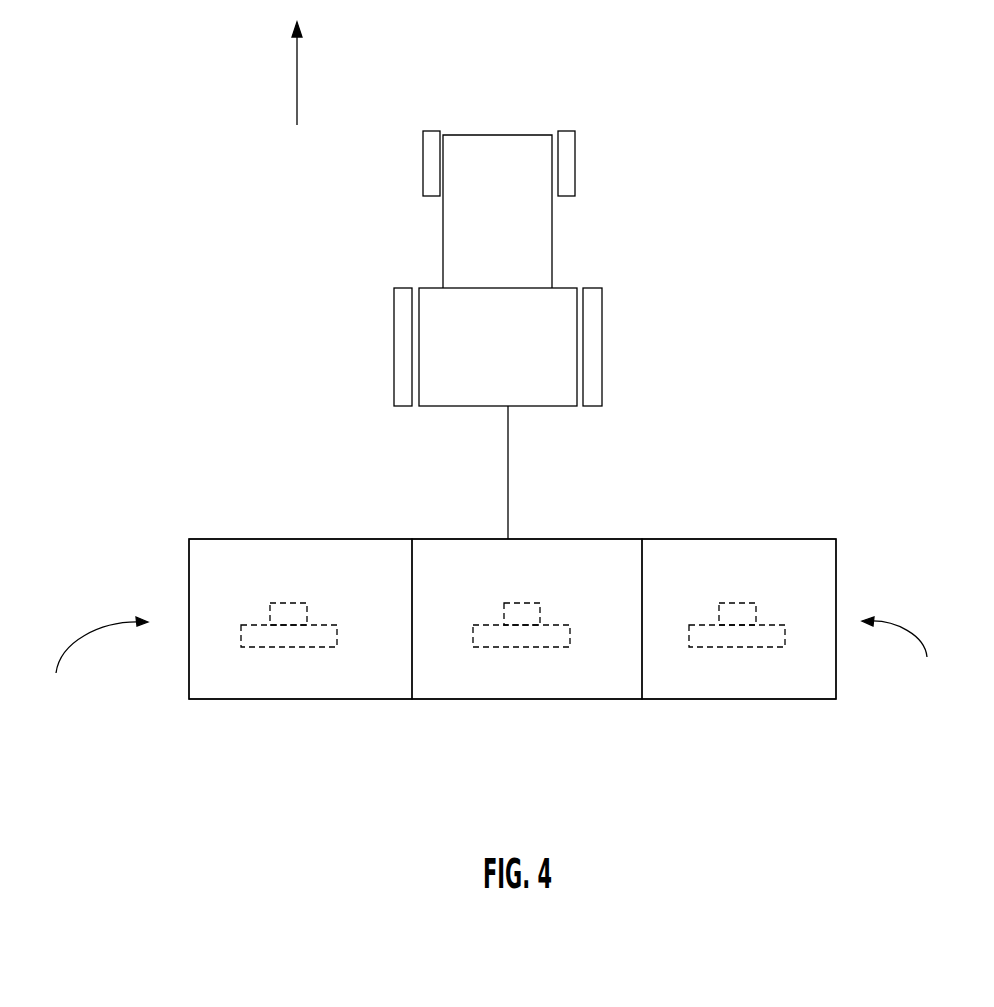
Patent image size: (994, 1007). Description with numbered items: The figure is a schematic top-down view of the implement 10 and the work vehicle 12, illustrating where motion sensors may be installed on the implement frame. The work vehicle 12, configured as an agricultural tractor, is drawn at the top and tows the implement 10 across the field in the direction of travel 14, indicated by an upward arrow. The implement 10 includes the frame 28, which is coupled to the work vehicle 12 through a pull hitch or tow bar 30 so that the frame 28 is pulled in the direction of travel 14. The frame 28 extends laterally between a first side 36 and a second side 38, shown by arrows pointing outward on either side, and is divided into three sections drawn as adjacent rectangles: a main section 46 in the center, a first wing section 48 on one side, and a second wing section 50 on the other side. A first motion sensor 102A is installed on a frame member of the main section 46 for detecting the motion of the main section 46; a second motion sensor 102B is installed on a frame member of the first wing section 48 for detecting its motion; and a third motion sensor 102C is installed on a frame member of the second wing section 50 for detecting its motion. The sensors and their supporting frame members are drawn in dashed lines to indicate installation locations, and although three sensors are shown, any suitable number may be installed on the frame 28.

The implement 10 is at (476, 603).
The work vehicle 12 is at (493, 142).
The direction of travel 14 is at (297, 97).
The frame 28 is at (514, 629).
The pull hitch or tow bar 30 is at (508, 483).
The first side 36 is at (93, 664).
The second side 38 is at (899, 653).
The main section 46 is at (597, 539).
The first wing section 48 is at (293, 539).
The second wing section 50 is at (766, 539).
The first motion sensor 102A is at (528, 672).
The second motion sensor 102B is at (286, 672).
The third motion sensor 102C is at (736, 672).